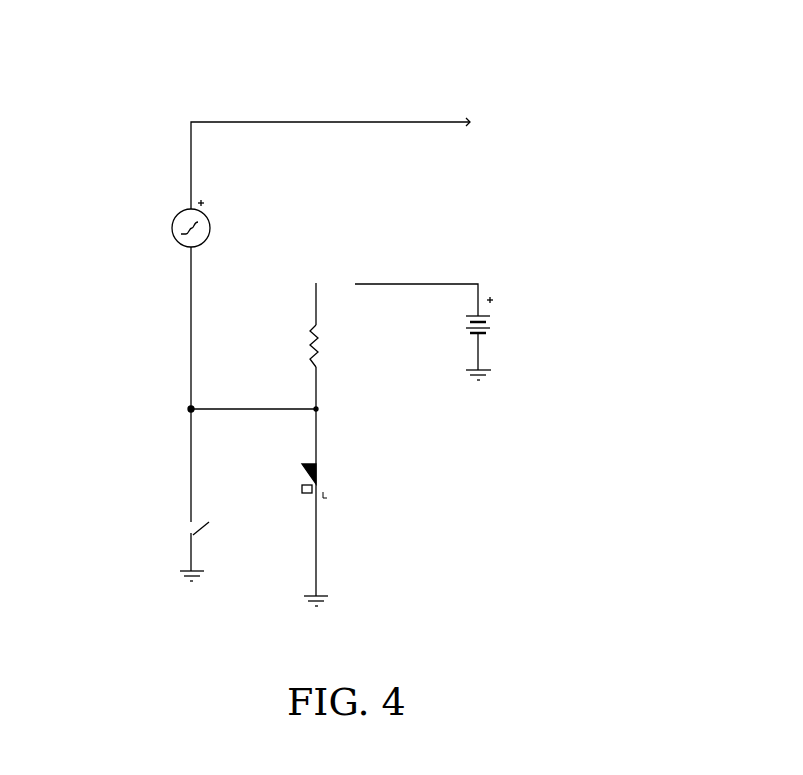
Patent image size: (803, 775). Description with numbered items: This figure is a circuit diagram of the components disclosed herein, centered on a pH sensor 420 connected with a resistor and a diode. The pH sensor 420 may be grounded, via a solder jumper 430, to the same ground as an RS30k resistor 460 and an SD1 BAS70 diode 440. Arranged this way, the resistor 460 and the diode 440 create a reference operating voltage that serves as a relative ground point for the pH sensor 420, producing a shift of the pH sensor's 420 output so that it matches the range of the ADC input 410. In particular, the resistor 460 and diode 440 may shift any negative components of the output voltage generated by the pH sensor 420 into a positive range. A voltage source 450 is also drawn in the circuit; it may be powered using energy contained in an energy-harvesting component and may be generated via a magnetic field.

The ADC input 410 is at (593, 113).
The pH sensor 420 is at (170, 215).
The solder jumper 430 is at (130, 525).
The SD1 BAS70 diode 440 is at (358, 530).
The voltage source 450 is at (547, 320).
The RS30k resistor 460 is at (357, 382).